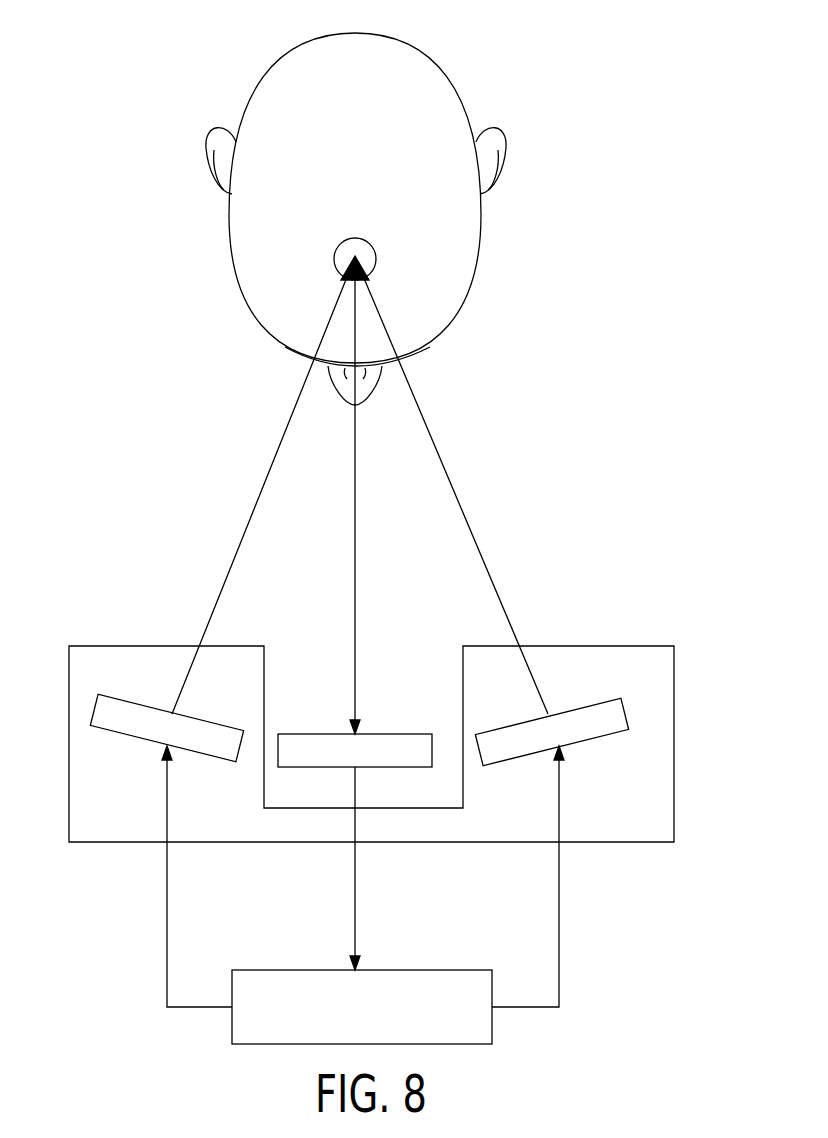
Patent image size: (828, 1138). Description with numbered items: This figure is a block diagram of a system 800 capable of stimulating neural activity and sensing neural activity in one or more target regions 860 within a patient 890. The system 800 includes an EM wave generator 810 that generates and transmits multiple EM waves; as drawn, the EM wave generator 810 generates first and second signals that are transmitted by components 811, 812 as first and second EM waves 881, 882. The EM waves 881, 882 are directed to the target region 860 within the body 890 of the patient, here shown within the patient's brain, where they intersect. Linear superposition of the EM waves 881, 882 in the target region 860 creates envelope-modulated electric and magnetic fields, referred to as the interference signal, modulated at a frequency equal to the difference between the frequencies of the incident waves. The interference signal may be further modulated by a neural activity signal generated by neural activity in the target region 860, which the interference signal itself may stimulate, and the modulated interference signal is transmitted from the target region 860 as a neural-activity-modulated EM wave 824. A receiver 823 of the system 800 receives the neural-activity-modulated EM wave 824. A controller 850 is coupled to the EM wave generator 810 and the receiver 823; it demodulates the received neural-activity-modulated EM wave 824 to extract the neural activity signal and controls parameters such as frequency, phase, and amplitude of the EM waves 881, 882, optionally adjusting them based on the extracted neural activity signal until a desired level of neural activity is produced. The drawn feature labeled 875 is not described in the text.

The system 800 is at (602, 584).
The EM wave generator 810 is at (88, 646).
The component 811 is at (205, 720).
The component 812 is at (590, 706).
The receiver 823 is at (392, 734).
The neural-activity-modulated EM wave 824 is at (355, 620).
The controller 850 is at (432, 970).
The target region 860 is at (352, 240).
The pupil / gaze point 875 is at (350, 254).
The first EM wave 881 is at (232, 550).
The second EM wave 882 is at (418, 412).
The patient 890 is at (440, 90).